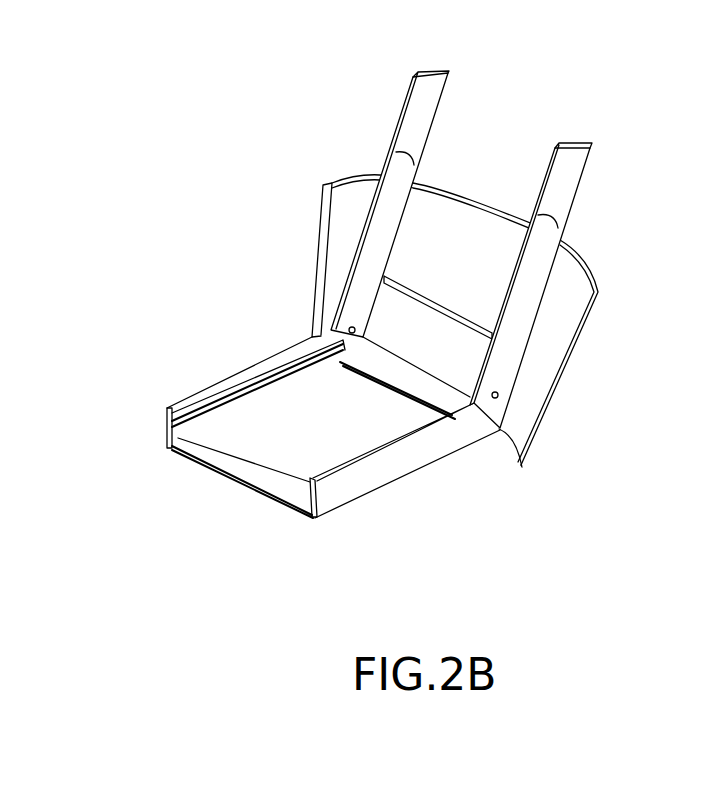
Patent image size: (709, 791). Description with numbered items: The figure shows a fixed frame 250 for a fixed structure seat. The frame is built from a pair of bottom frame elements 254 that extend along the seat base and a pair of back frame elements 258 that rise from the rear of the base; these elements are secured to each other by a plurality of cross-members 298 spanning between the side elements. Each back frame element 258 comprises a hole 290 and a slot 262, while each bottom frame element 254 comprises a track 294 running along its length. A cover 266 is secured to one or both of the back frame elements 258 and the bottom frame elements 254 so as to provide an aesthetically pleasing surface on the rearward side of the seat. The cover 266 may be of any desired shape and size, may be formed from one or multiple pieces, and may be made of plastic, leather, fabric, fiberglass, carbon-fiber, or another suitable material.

The fixed frame 250 is at (298, 158).
The bottom frame element 254 is at (255, 383).
The back frame element 258 is at (434, 113).
The slot 262 is at (418, 163).
The cover 266 is at (597, 283).
The hole 290 is at (354, 327).
The track 294 is at (297, 378).
The cross-member 298 is at (460, 320).